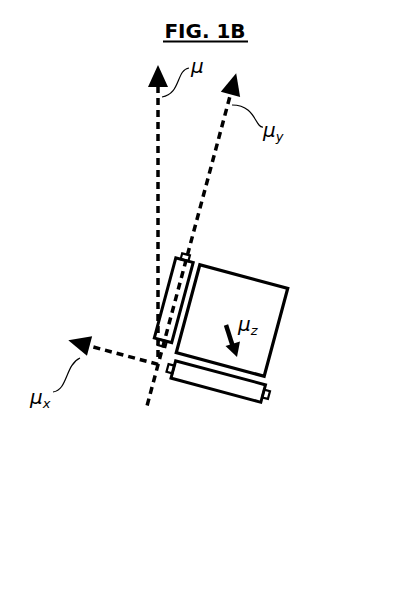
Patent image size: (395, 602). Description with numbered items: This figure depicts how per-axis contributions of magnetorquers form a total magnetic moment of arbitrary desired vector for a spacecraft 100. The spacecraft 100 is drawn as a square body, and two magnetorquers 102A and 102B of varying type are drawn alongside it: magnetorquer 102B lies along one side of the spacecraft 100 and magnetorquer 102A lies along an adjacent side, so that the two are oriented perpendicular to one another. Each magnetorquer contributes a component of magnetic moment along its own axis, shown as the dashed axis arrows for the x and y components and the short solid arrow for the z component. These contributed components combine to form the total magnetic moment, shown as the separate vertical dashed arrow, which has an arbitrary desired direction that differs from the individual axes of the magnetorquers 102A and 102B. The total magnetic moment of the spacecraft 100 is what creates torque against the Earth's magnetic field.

The spacecraft 100 is at (263, 283).
The magnetorquer 102A is at (230, 383).
The magnetorquer 102B is at (170, 302).